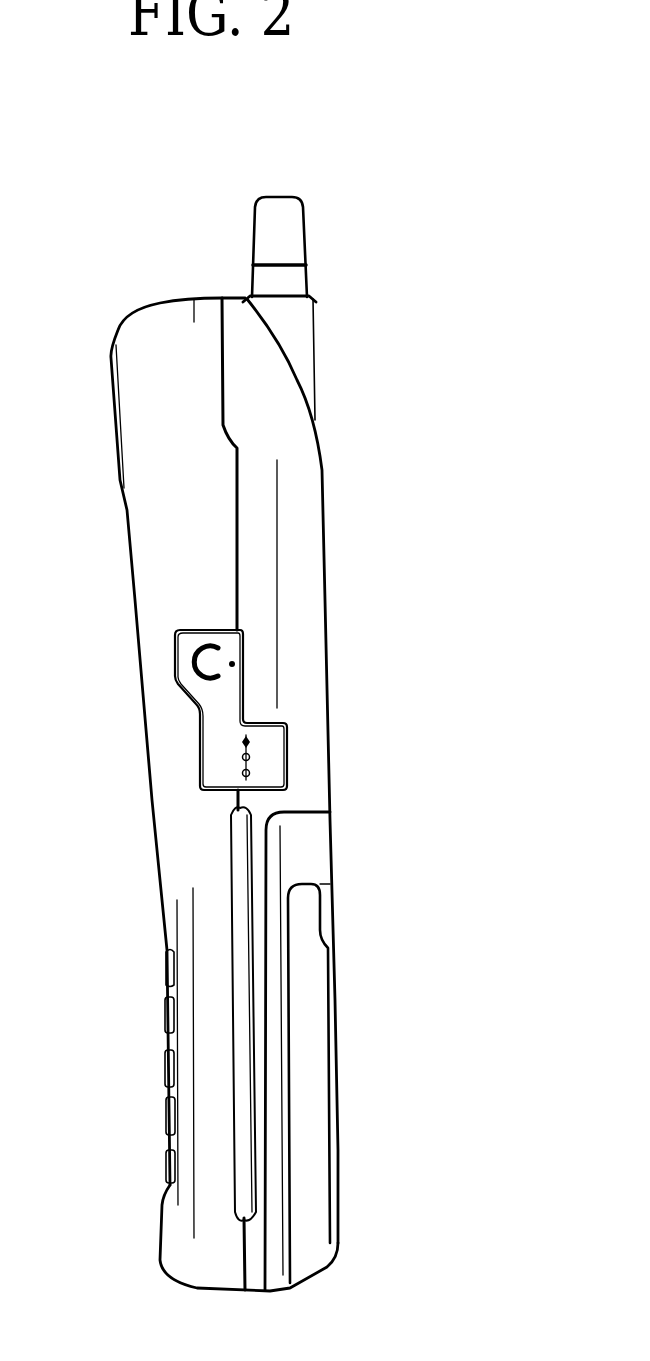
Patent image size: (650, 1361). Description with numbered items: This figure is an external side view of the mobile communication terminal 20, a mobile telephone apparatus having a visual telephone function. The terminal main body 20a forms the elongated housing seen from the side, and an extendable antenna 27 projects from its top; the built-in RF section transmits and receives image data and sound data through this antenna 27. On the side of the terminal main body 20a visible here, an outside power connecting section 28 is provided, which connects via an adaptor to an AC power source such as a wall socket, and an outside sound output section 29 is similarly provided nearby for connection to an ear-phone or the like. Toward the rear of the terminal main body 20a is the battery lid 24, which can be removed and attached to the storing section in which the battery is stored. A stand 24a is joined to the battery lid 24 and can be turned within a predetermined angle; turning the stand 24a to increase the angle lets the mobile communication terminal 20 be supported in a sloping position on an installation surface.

The mobile communication terminal 20 is at (423, 291).
The terminal main body 20a is at (325, 598).
The battery lid 24 is at (310, 852).
The stand 24a is at (320, 1140).
The extendable antenna 27 is at (298, 236).
The outside power connecting section 28 is at (280, 740).
The outside sound output section 29 is at (190, 662).